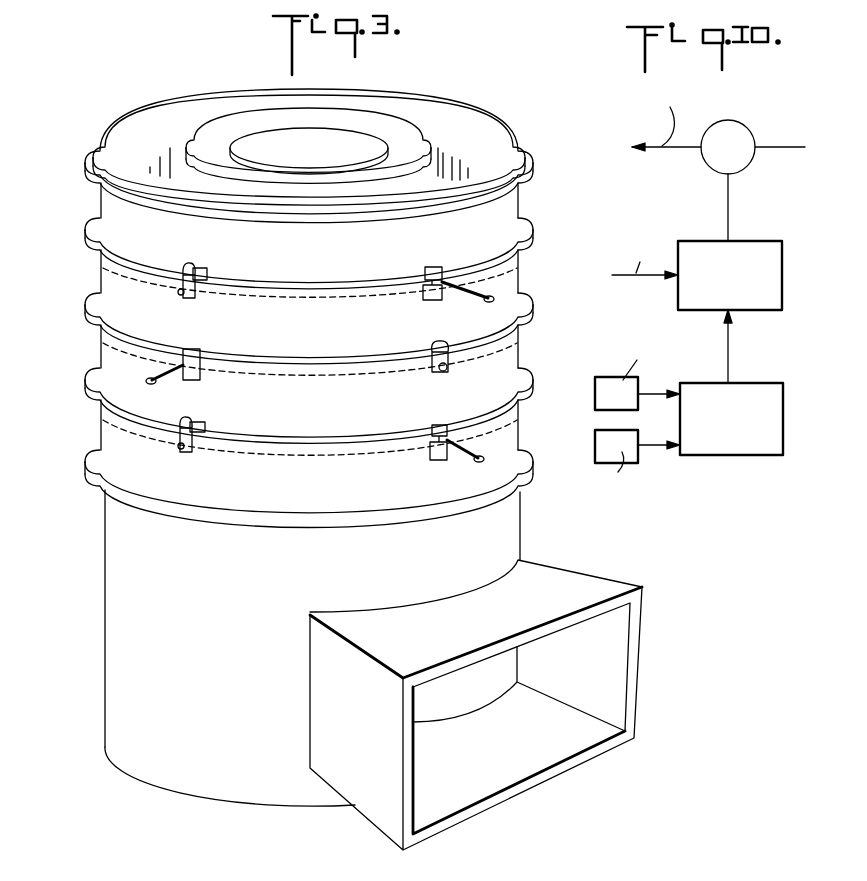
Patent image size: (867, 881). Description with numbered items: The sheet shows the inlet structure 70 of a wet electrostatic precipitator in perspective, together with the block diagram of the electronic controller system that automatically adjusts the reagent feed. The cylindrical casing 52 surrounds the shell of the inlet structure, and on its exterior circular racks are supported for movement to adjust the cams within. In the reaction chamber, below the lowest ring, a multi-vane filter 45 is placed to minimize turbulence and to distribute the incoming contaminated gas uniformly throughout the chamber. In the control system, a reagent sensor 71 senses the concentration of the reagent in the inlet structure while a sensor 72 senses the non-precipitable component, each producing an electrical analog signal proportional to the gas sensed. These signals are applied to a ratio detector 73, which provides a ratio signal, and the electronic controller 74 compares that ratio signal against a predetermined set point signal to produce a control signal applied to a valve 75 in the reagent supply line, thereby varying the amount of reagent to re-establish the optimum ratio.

In FIG. 3, the scrubber apparatus 70 is at (359, 484).
In FIG. 3, the cylindrical casing 52 is at (112, 440).
In FIG. 3, the multi-vane filter 45 is at (622, 677).
In FIG. 10, the reagent sensor 71 is at (598, 453).
In FIG. 10, the sensor 72 is at (597, 401).
In FIG. 10, the ratio detector 73 is at (758, 382).
In FIG. 10, the electronic controller 74 is at (702, 239).
In FIG. 10, the valve 75 is at (710, 167).